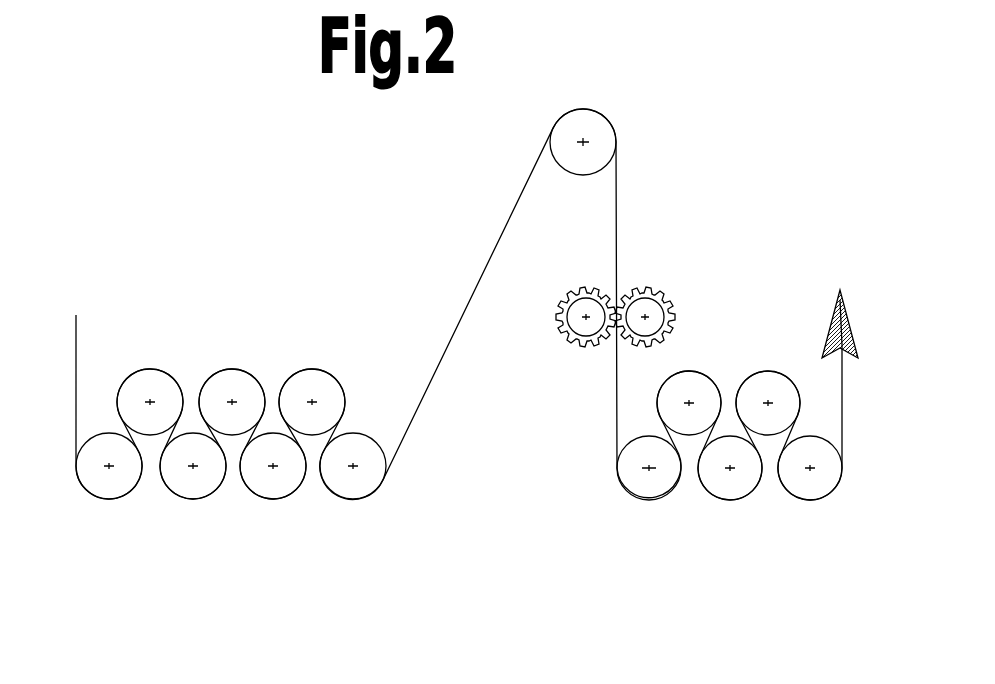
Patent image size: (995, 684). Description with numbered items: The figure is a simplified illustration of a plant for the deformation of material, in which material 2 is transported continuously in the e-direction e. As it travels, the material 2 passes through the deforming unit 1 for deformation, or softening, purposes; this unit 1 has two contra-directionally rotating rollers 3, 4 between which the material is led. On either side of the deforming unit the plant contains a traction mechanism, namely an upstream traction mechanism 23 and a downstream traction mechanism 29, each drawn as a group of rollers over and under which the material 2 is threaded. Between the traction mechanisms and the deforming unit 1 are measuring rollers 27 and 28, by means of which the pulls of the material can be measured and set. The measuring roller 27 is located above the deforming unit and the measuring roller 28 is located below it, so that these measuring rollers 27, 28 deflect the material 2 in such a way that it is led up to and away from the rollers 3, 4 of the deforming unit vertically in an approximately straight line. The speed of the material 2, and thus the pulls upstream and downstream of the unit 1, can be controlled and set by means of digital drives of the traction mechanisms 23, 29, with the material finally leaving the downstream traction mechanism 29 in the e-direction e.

The unit 1 is at (615, 284).
The material 2 is at (506, 226).
The roller 3 is at (560, 318).
The roller 4 is at (675, 317).
The traction mechanism 23 is at (218, 522).
The measuring roller 27 is at (619, 139).
The measuring roller 28 is at (632, 478).
The traction mechanism 29 is at (690, 478).
The e-direction e is at (844, 317).